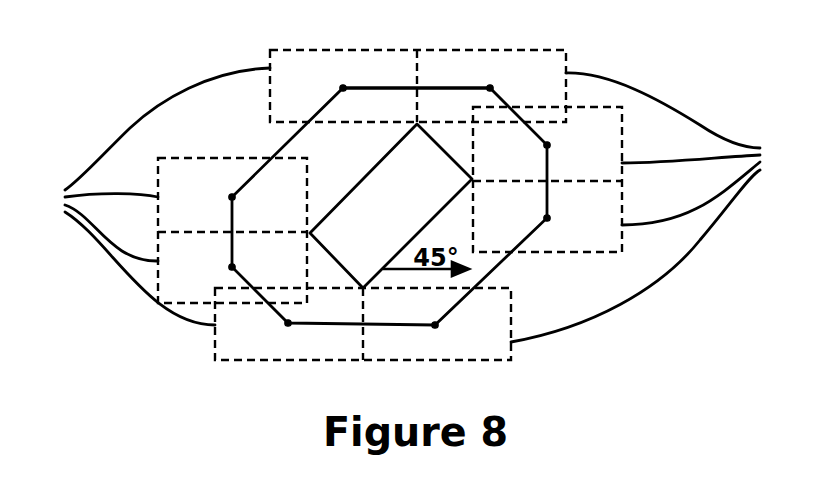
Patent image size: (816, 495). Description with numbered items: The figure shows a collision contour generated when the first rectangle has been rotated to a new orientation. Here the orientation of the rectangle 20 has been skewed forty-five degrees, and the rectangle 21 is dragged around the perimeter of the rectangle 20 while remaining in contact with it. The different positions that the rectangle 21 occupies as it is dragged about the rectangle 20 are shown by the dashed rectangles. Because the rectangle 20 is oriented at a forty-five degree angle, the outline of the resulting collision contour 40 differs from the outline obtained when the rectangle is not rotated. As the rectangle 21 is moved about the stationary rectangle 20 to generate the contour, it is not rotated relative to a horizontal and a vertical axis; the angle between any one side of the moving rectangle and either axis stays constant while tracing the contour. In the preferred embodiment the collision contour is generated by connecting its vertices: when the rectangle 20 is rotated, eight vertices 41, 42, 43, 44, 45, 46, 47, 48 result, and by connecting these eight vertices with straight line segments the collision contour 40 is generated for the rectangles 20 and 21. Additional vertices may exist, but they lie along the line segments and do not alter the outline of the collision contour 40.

The rectangle 20 is at (375, 215).
The rectangle 21 is at (409, 205).
The collision contour 40 is at (437, 88).
The vertex 41 is at (490, 88).
The vertex 42 is at (343, 88).
The vertex 43 is at (232, 197).
The vertex 44 is at (232, 267).
The vertex 45 is at (288, 323).
The vertex 46 is at (435, 325).
The vertex 47 is at (547, 218).
The vertex 48 is at (547, 145).